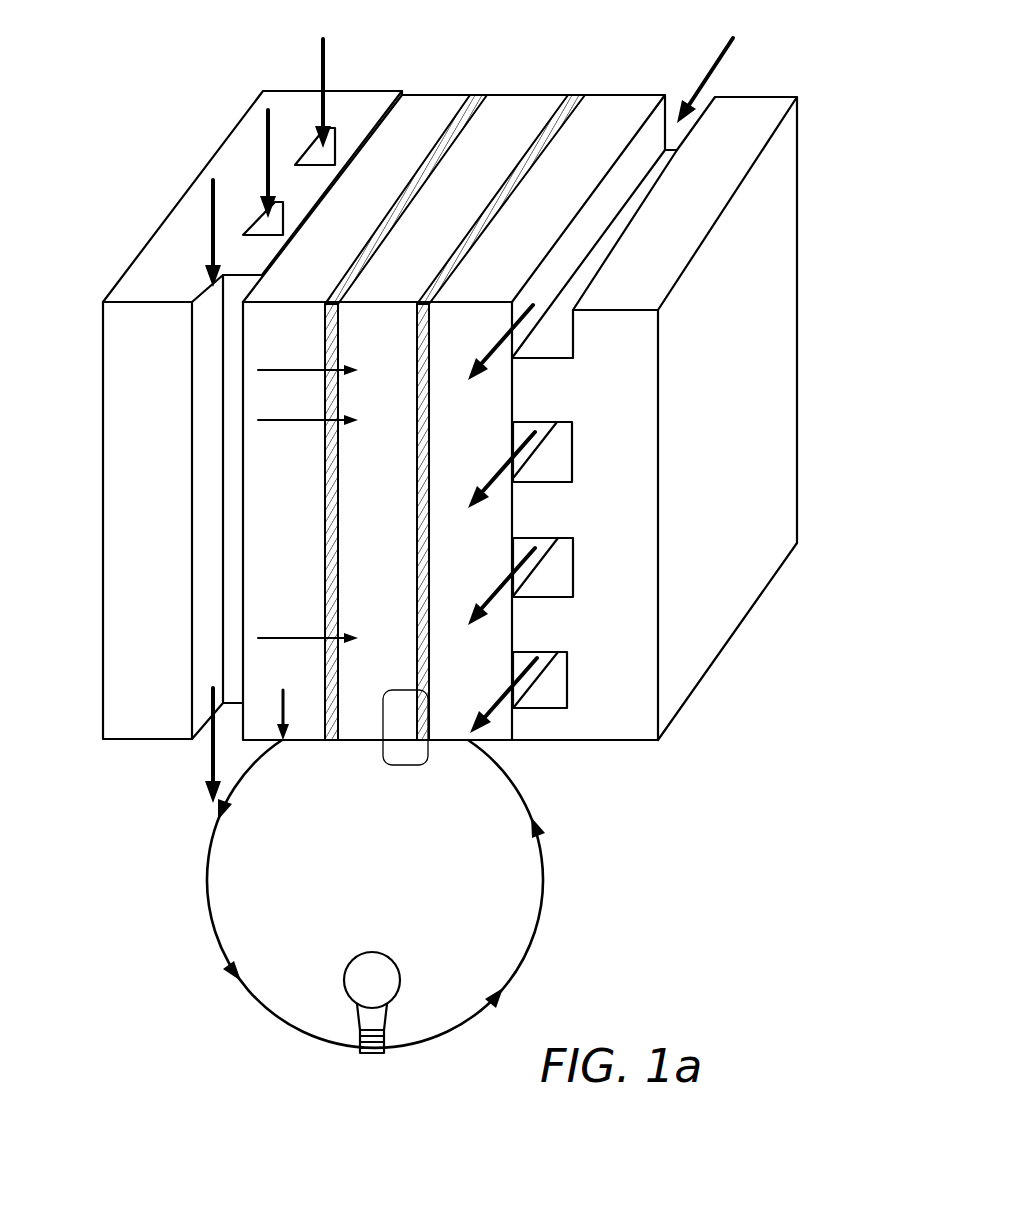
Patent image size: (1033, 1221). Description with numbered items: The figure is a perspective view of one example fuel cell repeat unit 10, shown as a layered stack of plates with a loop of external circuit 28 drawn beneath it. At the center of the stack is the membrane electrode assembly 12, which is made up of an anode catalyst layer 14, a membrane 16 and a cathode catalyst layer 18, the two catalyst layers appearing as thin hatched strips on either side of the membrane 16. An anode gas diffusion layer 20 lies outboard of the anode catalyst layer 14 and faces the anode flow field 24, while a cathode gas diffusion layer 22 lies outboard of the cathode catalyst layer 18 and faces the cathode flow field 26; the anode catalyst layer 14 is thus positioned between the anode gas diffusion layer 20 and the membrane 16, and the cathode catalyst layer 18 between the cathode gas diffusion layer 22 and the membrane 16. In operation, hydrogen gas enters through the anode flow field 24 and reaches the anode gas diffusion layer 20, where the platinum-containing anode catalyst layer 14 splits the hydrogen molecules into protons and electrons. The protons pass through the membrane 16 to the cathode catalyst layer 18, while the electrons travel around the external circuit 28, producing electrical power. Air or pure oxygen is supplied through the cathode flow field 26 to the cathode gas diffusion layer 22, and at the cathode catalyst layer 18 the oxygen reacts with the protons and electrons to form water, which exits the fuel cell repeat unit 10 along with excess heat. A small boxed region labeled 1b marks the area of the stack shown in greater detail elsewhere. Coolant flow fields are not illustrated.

The fuel cell repeat unit 10 is at (136, 93).
The membrane electrode assembly 12 is at (588, 91).
The anode catalyst layer 14 is at (423, 182).
The membrane 16 is at (393, 380).
The cathode catalyst layer 18 is at (492, 213).
The anode gas diffusion layer 20 is at (351, 423).
The cathode gas diffusion layer 22 is at (532, 420).
The anode flow field 24 is at (352, 142).
The cathode flow field 26 is at (558, 343).
The external circuit 28 is at (210, 902).
The region detailed in FIG. 1b is at (412, 765).